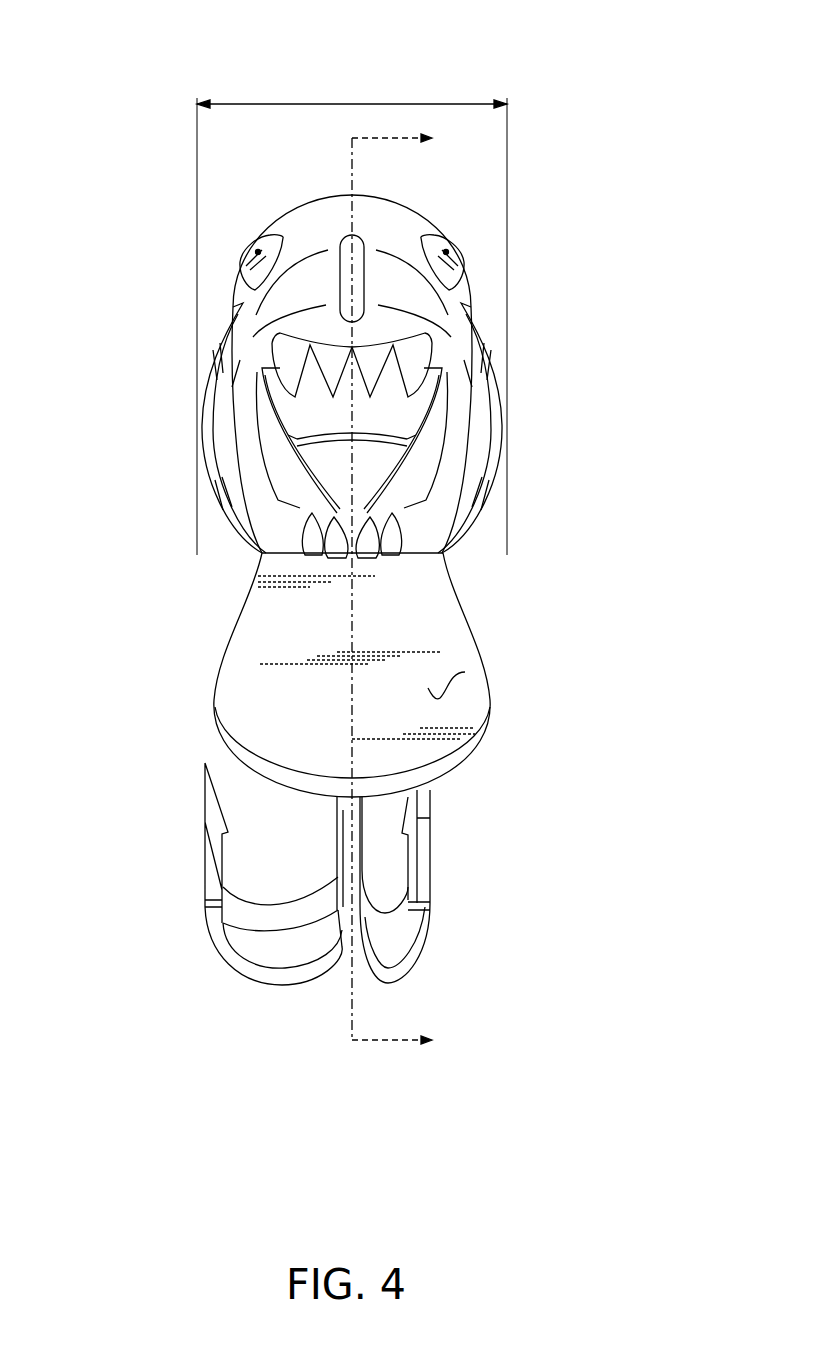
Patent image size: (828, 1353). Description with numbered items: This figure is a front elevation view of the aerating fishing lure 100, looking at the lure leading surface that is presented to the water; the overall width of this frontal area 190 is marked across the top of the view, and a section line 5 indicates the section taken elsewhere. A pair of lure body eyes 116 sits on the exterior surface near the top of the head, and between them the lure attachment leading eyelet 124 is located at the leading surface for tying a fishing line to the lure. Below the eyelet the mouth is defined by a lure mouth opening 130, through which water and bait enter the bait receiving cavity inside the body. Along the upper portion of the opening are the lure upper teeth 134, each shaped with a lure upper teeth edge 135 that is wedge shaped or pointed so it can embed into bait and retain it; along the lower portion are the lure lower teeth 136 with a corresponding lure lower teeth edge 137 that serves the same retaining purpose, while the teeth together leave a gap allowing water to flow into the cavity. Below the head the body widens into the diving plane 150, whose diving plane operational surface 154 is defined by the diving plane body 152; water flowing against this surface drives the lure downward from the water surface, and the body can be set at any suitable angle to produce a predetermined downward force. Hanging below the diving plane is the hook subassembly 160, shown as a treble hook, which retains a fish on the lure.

The aerating fishing lure 100 is at (611, 55).
The frontal area 190 is at (352, 103).
The lure body eyes 116 is at (242, 254).
The lure attachment leading eyelet 124 is at (337, 240).
The lure upper teeth 134 is at (412, 355).
The lure upper teeth edge 135 is at (413, 406).
The lure mouth opening 130 is at (440, 458).
The lure lower teeth edge 137 is at (300, 505).
The lure lower teeth 136 is at (300, 540).
The diving plane 150 is at (503, 612).
The diving plane operational surface 154 is at (465, 672).
The diving plane body 152 is at (463, 760).
The hook subassembly 160 is at (172, 845).
The section line 5- 5 is at (403, 590).